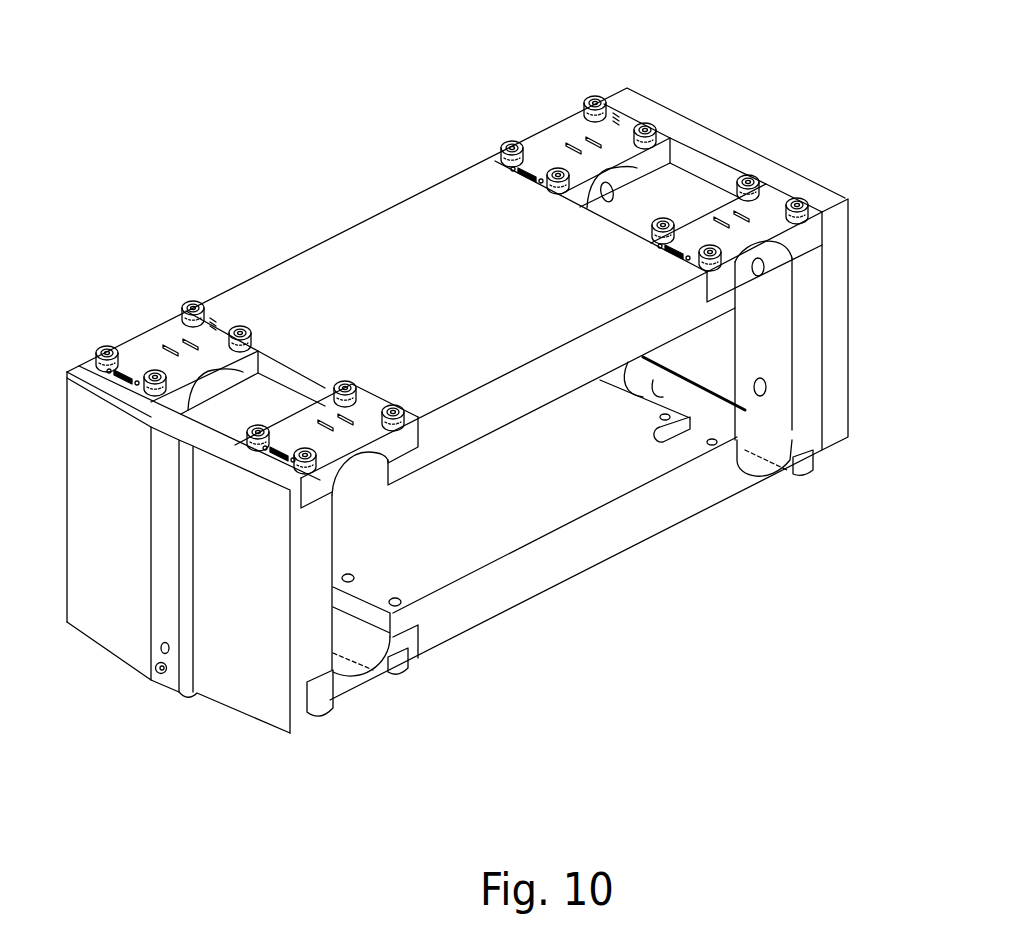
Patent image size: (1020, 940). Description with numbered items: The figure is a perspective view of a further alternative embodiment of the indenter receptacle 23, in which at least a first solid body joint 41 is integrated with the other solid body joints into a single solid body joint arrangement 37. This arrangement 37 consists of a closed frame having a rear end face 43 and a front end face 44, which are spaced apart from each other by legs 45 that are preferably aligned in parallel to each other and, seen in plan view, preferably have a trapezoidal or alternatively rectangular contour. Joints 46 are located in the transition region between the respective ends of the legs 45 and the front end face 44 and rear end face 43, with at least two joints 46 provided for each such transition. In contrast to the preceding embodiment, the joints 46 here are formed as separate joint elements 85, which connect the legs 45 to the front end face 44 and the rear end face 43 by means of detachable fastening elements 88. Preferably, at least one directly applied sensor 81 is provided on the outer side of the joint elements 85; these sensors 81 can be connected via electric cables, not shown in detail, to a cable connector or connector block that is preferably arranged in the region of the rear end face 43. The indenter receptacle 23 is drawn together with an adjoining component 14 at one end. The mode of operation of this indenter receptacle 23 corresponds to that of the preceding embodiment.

The battery module 14 is at (189, 704).
The indenter receptacle 23 is at (282, 198).
The solid body joint arrangement 37 is at (388, 133).
The first solid body joint 41 is at (580, 642).
The rear end face 43 is at (838, 240).
The front end face 44 is at (318, 656).
The legs 45 is at (540, 385).
The joints 46 is at (772, 264).
The directly applied sensor 81 is at (119, 384).
The joint elements 85 is at (138, 311).
The detachable fastening elements 88 is at (242, 324).